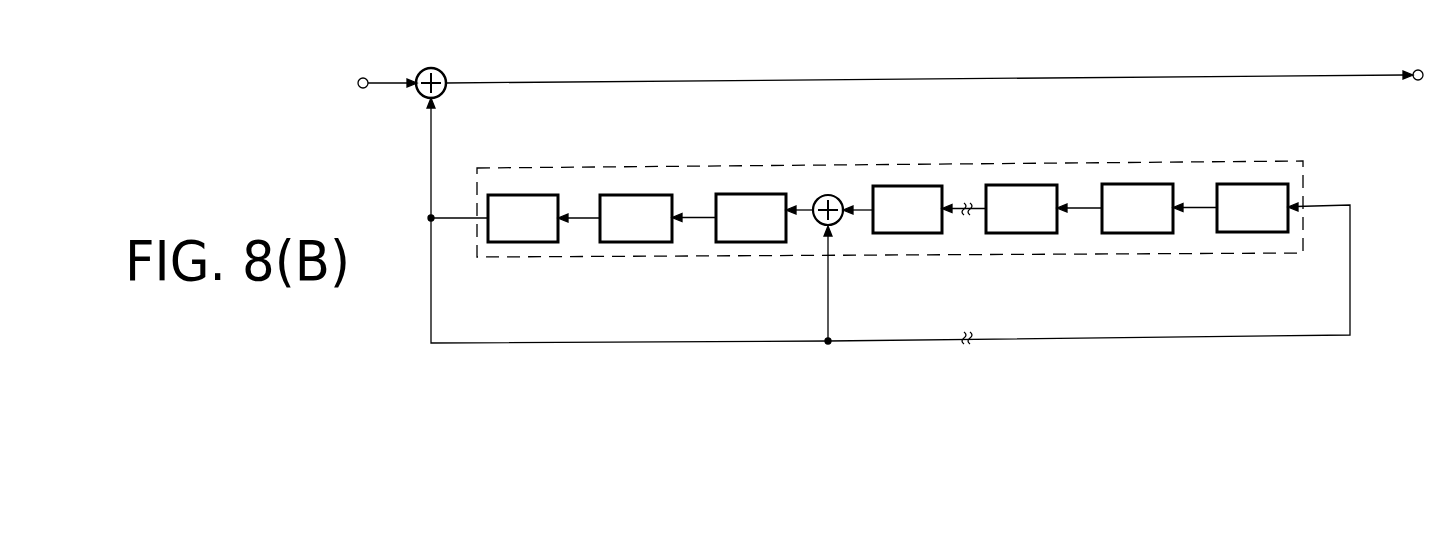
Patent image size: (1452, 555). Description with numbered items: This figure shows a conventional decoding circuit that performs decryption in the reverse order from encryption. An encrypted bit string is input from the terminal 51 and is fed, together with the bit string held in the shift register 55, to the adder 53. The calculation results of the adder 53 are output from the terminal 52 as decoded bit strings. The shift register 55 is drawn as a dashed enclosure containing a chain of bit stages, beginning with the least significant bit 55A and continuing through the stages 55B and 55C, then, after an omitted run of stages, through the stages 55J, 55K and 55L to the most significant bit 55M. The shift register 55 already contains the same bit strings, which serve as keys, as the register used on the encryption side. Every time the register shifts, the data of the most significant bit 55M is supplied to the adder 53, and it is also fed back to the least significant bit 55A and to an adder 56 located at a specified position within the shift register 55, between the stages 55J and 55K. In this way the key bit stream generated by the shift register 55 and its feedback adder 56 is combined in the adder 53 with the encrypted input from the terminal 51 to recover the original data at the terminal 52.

The terminal 51 is at (1418, 81).
The terminal 52 is at (363, 89).
The adder 53 is at (438, 69).
The shift register 55 is at (1303, 180).
The least significant bit 55A is at (1252, 208).
The shift register stage 55B is at (1137, 208).
The shift register stage 55C is at (1021, 209).
The shift register stage 55J is at (907, 209).
The shift register stage 55K is at (751, 218).
The shift register stage 55L is at (636, 218).
The most significant bit 55M is at (523, 218).
The adder 56 is at (829, 195).